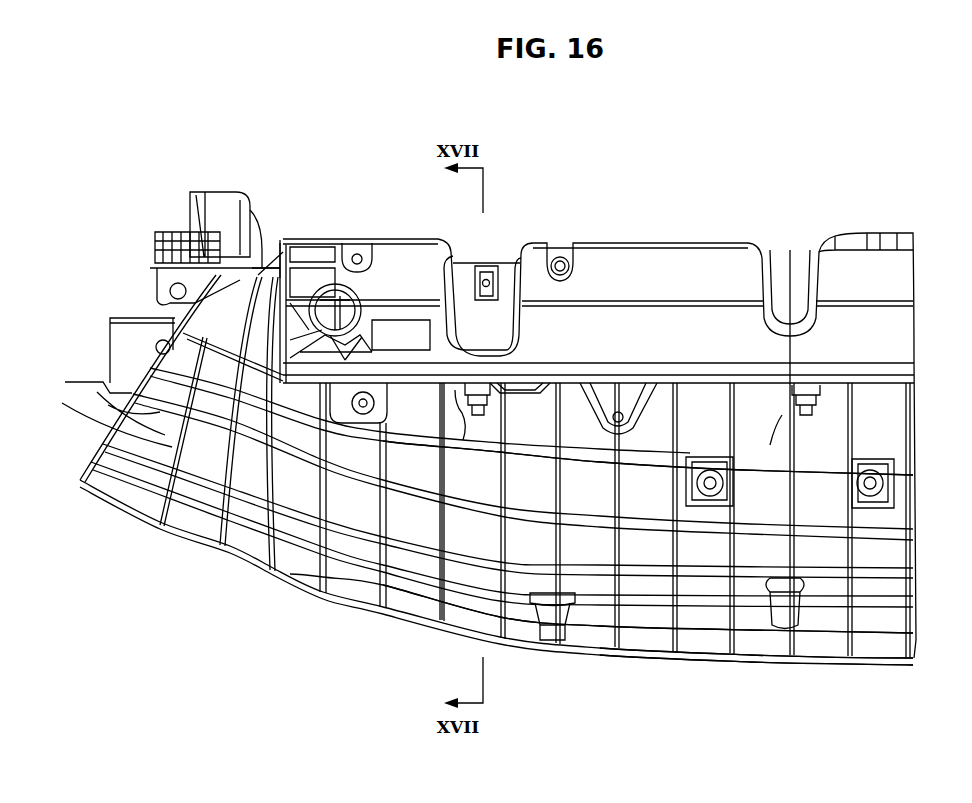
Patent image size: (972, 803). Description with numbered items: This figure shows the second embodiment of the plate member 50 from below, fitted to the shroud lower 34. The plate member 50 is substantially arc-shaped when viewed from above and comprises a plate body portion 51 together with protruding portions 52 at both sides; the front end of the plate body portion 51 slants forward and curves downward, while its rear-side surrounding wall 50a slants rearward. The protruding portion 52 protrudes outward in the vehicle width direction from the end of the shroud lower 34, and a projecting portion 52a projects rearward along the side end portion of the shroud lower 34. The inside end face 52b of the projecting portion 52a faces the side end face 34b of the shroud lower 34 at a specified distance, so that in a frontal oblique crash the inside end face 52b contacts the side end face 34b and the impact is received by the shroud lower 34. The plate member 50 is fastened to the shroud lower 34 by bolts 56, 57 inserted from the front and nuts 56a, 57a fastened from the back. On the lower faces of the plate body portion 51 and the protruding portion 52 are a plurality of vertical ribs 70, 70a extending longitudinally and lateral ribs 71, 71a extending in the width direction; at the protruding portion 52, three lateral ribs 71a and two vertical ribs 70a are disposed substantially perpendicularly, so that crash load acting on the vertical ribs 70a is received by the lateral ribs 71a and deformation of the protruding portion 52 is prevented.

The shroud lower 34 is at (668, 240).
The side end face of the shroud lower 34b is at (280, 241).
The plate member 50 is at (573, 666).
The rear-side surrounding wall 50a is at (768, 662).
The plate body portion 51 is at (708, 612).
The protruding portion 52 is at (125, 487).
The projecting portion 52a is at (222, 295).
The inside end face of the projecting portion 52b is at (279, 278).
The bolt 56 is at (478, 410).
The nut 56a is at (463, 402).
The bolt 57 is at (808, 408).
The nut 57a is at (787, 400).
The vertical rib 70 is at (387, 452).
The vertical rib 70a is at (135, 397).
The lateral rib 71 is at (818, 470).
The lateral rib 71a is at (203, 337).